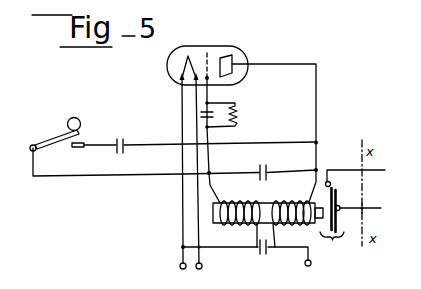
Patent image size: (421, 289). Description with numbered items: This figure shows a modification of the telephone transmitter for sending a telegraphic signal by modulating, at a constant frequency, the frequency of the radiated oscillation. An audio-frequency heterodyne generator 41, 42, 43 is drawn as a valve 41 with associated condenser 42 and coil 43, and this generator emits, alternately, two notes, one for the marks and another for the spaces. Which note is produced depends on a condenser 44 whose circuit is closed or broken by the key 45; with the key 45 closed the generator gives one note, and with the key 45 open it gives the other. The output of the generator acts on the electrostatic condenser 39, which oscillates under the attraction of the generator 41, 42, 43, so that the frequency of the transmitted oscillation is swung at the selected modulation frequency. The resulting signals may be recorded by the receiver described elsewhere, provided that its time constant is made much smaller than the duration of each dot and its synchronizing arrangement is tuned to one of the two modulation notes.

The electrostatic condenser 39 is at (332, 220).
The audio-frequency heterodyne generator 41 is at (236, 48).
The audio-frequency heterodyne generator 42 is at (270, 170).
The audio-frequency heterodyne generator 43 is at (238, 223).
The condenser 44 is at (125, 143).
The key 45 is at (52, 141).